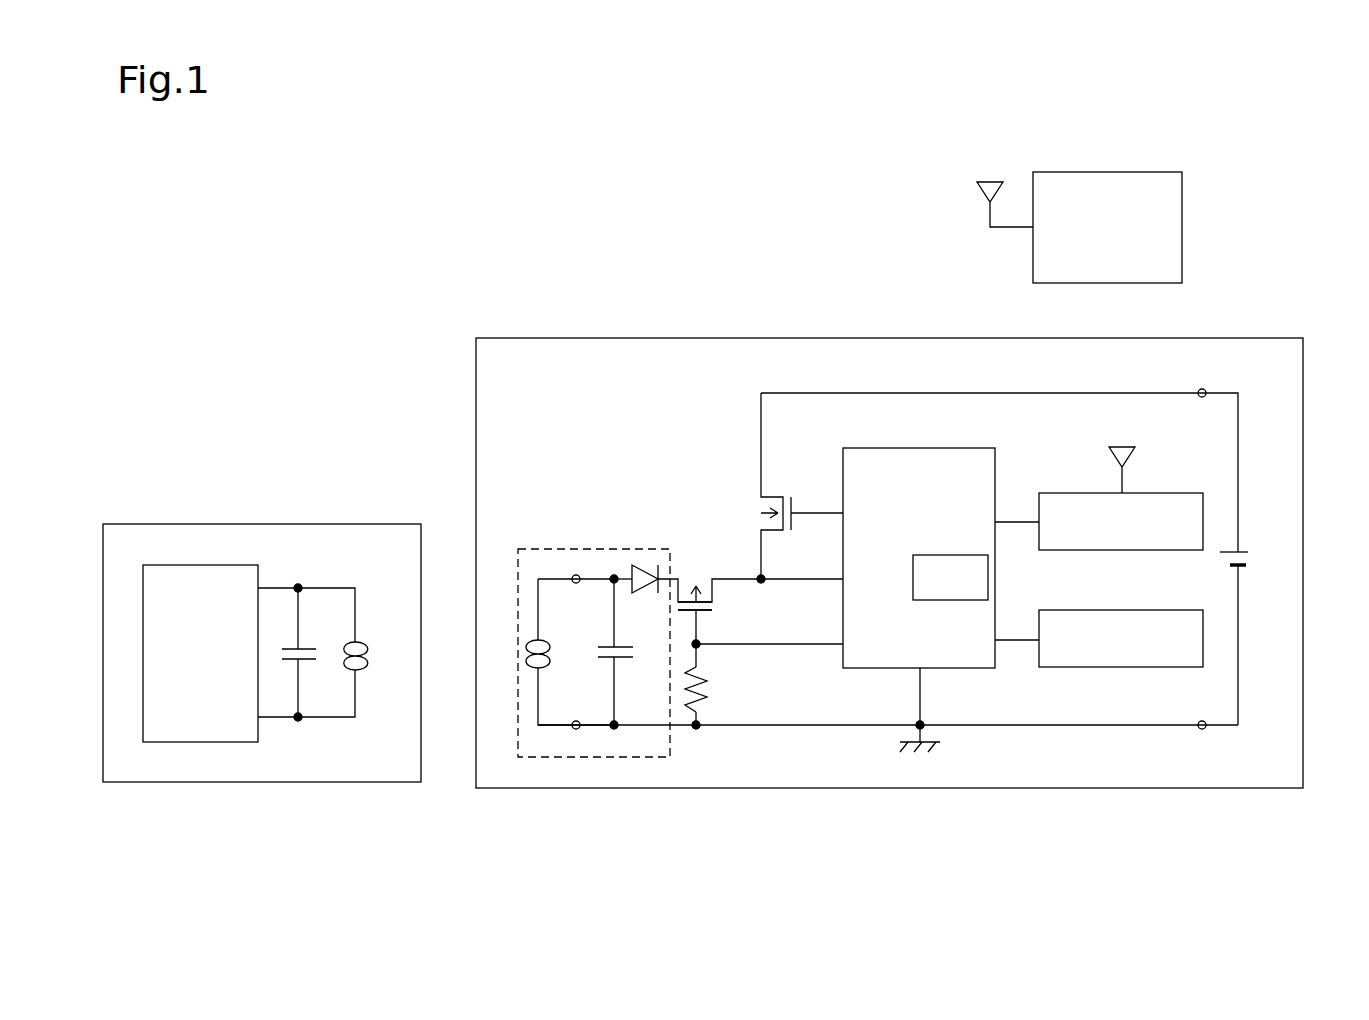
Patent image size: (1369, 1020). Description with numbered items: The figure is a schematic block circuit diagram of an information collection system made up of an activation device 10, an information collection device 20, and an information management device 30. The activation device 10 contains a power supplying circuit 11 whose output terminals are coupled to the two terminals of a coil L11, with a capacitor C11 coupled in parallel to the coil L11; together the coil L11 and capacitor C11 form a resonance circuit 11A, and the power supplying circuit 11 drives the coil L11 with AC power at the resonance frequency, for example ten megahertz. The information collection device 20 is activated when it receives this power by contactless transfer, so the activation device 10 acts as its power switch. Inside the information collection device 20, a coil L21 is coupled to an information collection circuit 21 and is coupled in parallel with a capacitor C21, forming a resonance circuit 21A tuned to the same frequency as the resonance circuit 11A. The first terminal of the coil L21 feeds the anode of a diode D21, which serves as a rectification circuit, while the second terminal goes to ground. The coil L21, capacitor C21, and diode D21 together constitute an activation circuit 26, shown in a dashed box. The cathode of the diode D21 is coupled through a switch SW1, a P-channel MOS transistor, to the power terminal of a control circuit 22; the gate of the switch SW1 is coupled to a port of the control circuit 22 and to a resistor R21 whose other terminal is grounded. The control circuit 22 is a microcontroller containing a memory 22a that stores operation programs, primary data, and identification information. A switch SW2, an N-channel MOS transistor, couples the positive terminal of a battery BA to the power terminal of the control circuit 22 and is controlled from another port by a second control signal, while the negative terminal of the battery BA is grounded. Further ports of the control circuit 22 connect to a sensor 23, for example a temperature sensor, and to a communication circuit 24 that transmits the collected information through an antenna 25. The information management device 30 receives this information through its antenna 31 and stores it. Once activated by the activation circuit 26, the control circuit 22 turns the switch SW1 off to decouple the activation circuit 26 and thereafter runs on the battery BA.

The activation device 10 is at (140, 523).
The power supplying circuit 11 is at (240, 565).
The resonance circuit 11A is at (345, 570).
The capacitor C11 is at (303, 645).
The coil L11 is at (363, 637).
The information collection device 20 is at (542, 337).
The information collection circuit 21 is at (626, 411).
The resonance circuit 21A is at (539, 575).
The activation circuit 26 is at (595, 548).
The coil L21 is at (525, 632).
The capacitor C21 is at (610, 645).
The diode D21 is at (652, 563).
The switch SW1 is at (703, 612).
The resistor R21 is at (707, 692).
The switch SW2 is at (772, 495).
The control circuit 22 is at (967, 448).
The memory 22a is at (933, 555).
The sensor 23 is at (1175, 608).
The communication circuit 24 is at (1175, 492).
The antenna 25 is at (1128, 447).
The battery BA is at (1243, 552).
The information management device 30 is at (1075, 171).
The antenna 31 is at (982, 181).